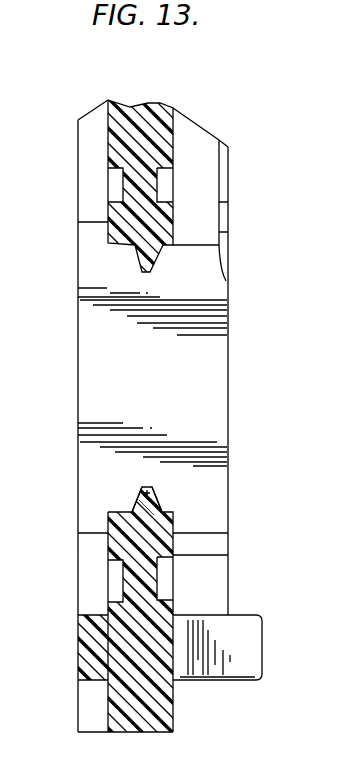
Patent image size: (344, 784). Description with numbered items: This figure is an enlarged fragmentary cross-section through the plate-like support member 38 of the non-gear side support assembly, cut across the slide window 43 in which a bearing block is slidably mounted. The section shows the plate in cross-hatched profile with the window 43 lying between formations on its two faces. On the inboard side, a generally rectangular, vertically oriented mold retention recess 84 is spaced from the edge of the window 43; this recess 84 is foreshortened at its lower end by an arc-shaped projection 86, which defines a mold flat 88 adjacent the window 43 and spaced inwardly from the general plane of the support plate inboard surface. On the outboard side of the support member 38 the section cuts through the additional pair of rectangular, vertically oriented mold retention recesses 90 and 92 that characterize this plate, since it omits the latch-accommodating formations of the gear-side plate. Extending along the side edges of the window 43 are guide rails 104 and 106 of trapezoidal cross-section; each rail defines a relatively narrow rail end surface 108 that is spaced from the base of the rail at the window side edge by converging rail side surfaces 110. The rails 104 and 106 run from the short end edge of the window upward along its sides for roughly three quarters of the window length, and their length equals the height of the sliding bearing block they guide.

The support member 38 is at (158, 732).
The slide window 43 is at (128, 371).
The mold retention recess 84 is at (162, 191).
The arc-shaped projection 86 is at (207, 146).
The mold flat 88 is at (229, 281).
The mold retention recess 90 is at (117, 582).
The mold retention recess 92 is at (117, 183).
The guide rail 104 is at (147, 491).
The guide rail 106 is at (146, 272).
The rail end surface 108 is at (142, 488).
The rail side surfaces 110 is at (132, 520).